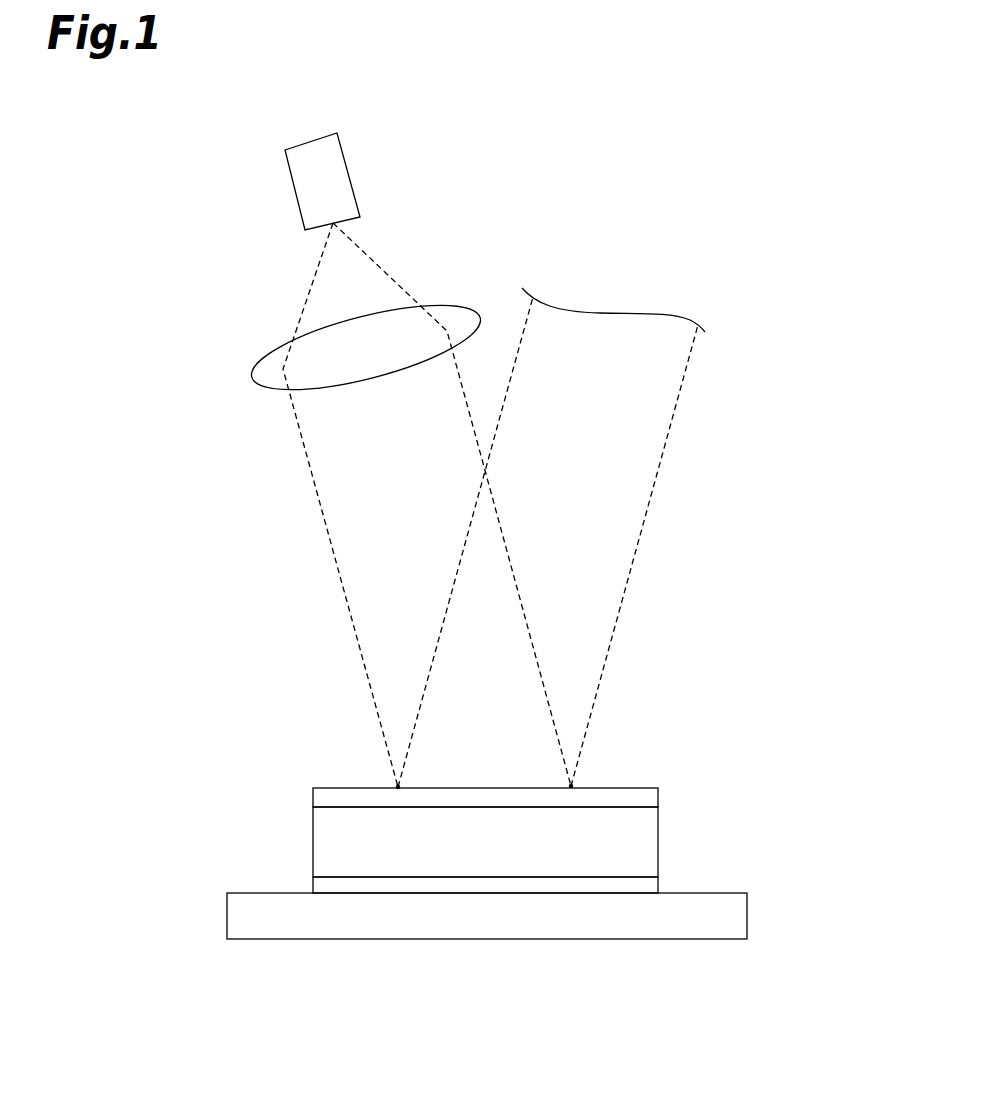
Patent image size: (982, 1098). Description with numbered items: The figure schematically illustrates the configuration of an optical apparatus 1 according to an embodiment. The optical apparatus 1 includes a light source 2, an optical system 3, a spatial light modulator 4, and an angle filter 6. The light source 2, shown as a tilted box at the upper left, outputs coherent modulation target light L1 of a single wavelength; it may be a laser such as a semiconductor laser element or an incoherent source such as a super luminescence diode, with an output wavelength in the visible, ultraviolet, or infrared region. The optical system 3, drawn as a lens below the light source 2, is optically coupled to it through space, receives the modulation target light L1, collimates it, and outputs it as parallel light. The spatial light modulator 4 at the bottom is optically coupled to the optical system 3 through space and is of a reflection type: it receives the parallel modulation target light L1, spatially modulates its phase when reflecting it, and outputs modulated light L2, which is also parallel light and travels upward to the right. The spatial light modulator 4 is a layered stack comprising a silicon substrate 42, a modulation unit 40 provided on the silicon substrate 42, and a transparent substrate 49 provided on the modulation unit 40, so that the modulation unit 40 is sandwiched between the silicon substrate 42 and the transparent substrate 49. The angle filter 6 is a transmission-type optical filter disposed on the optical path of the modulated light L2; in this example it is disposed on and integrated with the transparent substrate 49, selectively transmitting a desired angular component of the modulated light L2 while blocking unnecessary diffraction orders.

The optical apparatus 1 is at (733, 201).
The light source 2 is at (293, 192).
The optical system 3 is at (253, 380).
The modulation target light L1 is at (313, 481).
The modulated light L2 is at (667, 433).
The spatial light modulator 4 is at (213, 806).
The angle filter 6 is at (660, 795).
The transparent substrate 49 is at (660, 838).
The modulation unit 40 is at (658, 878).
The silicon substrate 42 is at (747, 915).